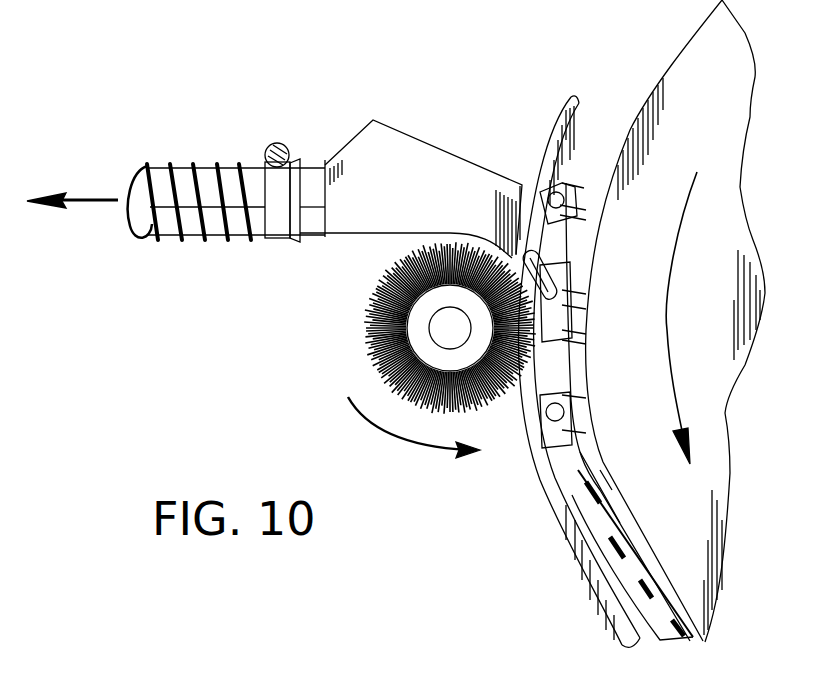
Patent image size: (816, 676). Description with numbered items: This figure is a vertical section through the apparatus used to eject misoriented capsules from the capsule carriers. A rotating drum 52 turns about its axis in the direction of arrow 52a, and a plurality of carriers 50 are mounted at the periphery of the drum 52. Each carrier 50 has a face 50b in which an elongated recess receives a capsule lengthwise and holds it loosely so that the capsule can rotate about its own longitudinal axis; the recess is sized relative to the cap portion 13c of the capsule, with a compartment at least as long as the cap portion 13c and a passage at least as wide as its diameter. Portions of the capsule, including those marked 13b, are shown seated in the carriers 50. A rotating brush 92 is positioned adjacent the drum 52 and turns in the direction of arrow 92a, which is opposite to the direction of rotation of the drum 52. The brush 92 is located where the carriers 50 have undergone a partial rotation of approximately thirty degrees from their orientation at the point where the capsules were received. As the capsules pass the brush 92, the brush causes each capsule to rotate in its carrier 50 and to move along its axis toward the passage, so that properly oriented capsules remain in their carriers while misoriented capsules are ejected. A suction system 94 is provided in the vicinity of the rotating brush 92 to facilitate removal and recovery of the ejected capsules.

The suction system 94 is at (393, 134).
The rotating brush 92 is at (466, 418).
The arrow 92a is at (387, 440).
The rotating drum 52 is at (648, 88).
The arrow 52a is at (670, 327).
The carriers 50 is at (585, 205).
The face 50b is at (575, 548).
The strip section 13b is at (590, 222).
The cap portion 13c is at (578, 277).